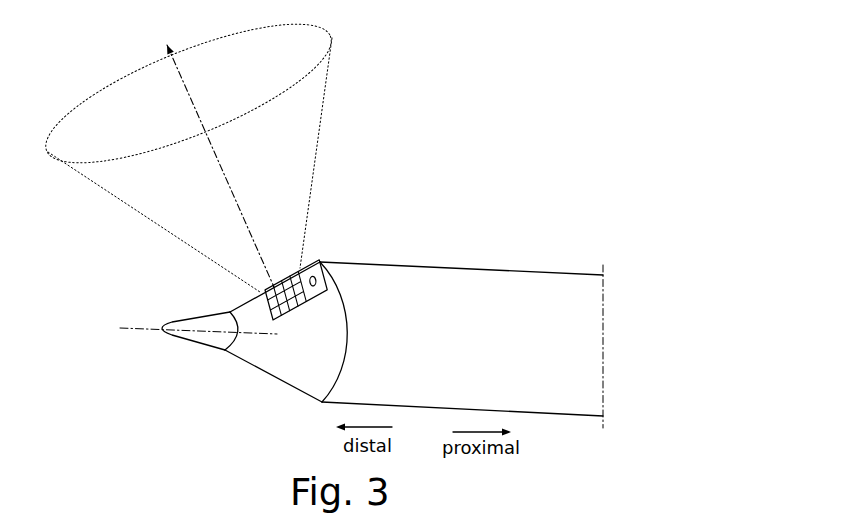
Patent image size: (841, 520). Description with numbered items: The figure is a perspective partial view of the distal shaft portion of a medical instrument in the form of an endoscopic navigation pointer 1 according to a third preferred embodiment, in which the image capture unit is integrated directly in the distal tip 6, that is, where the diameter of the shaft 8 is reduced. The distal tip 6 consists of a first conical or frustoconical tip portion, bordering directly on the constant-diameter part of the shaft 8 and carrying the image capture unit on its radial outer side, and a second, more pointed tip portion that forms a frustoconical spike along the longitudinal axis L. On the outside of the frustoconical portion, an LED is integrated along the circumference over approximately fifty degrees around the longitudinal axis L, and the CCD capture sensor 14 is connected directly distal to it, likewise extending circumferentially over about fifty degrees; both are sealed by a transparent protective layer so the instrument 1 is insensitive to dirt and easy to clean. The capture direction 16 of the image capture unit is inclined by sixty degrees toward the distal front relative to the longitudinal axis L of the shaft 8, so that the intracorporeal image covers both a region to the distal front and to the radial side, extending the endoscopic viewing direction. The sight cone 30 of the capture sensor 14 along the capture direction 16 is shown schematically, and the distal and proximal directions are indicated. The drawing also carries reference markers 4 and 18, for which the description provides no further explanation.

The endoscopic navigation pointer 1 is at (382, 292).
The distal head section 4 is at (366, 207).
The distal tip 6 is at (235, 377).
The shaft 8 is at (548, 282).
The CCD capture sensor 14 is at (293, 312).
The capture direction 16 is at (244, 208).
The light source 18 is at (326, 297).
The sight cone 30 is at (326, 95).
The longitudinal axis L is at (122, 329).